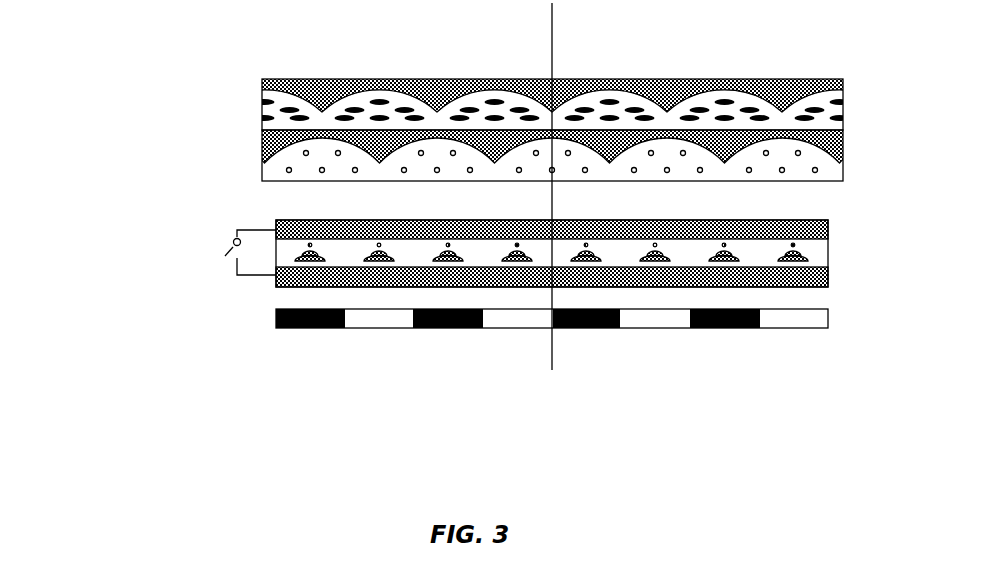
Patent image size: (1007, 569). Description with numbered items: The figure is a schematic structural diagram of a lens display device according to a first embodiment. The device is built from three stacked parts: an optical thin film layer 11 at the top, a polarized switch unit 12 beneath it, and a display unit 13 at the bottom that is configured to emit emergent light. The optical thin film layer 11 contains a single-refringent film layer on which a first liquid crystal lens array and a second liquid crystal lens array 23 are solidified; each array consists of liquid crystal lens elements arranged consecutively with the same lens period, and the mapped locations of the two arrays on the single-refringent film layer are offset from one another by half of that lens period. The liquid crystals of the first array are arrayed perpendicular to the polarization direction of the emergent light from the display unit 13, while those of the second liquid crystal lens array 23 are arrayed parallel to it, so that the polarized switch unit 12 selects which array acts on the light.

The optical thin film layer 11 is at (573, 109).
The polarized switch unit 12 is at (828, 254).
The display unit 13 is at (828, 320).
The second liquid crystal lens array 23 is at (293, 167).